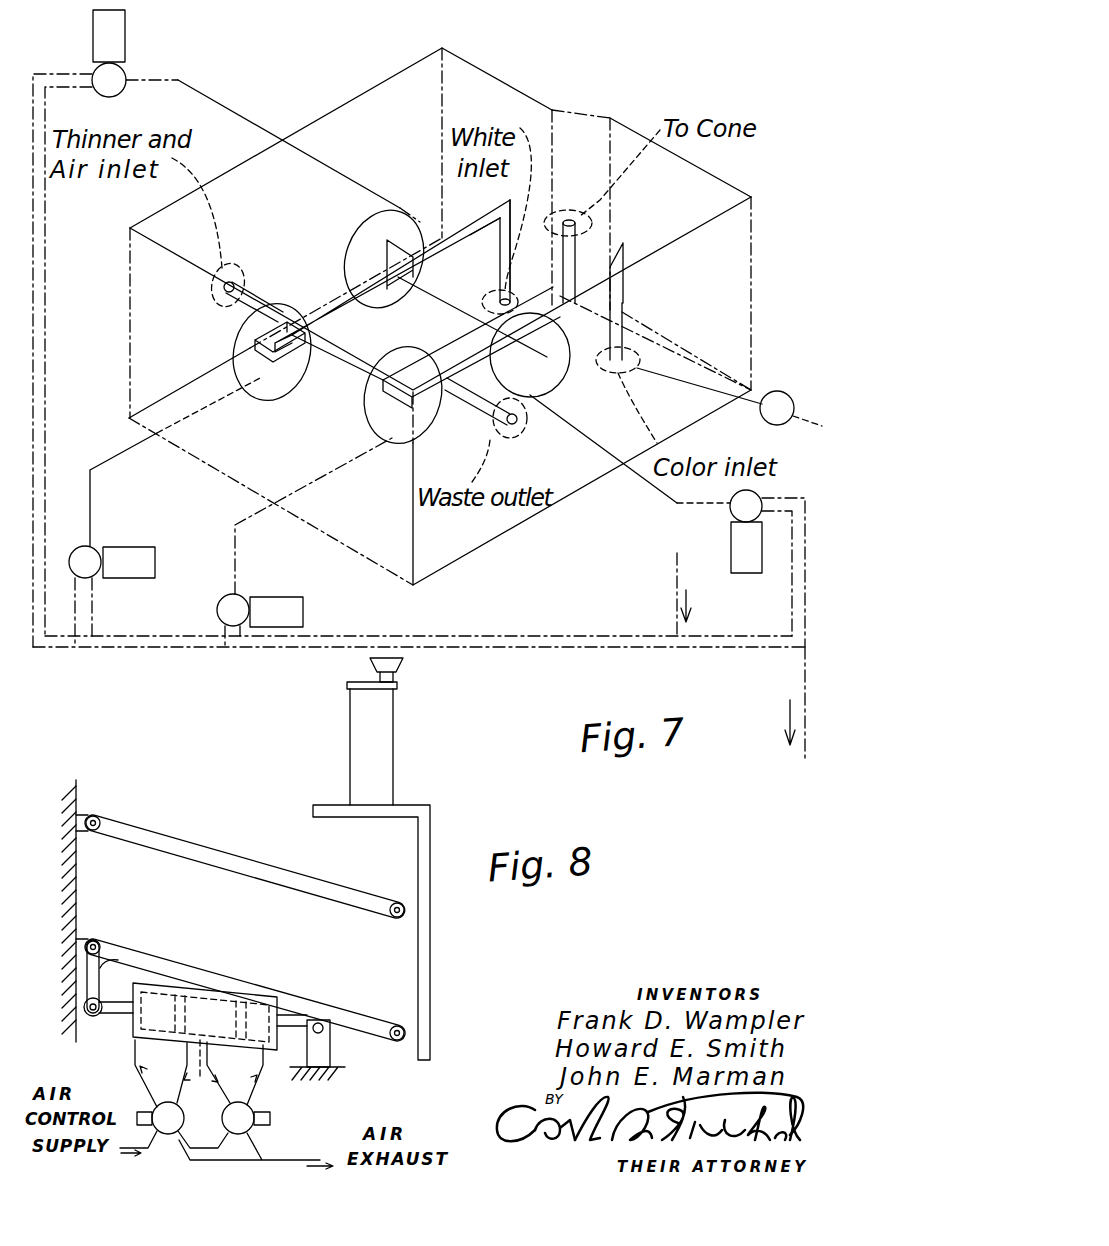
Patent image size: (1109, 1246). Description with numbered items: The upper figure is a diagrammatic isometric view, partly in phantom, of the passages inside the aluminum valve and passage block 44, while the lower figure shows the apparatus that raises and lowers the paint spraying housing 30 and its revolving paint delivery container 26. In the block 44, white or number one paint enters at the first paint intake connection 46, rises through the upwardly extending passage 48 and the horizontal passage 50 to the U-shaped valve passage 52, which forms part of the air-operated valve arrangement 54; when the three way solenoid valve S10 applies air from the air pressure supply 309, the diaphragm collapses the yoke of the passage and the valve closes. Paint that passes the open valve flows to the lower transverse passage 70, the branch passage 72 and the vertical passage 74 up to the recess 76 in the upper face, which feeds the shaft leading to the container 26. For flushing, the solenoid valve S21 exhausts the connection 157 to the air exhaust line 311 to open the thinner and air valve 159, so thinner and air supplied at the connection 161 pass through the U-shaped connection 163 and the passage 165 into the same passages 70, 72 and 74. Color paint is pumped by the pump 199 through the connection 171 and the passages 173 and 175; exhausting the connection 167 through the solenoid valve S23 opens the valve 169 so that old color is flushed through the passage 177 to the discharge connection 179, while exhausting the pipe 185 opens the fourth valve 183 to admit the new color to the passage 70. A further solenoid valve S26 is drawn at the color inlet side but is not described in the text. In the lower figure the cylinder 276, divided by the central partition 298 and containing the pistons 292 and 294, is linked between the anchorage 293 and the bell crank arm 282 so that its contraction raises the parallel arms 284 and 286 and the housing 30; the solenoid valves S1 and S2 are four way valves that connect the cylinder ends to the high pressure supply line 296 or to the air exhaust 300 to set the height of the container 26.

In FIG. 7, the valve and passage block 44 is at (520, 585).
In FIG. 7, the three way solenoid valve S10 is at (125, 30).
In FIG. 7, the valve arrangement 54 is at (357, 240).
In FIG. 7, the thinner and air valve 159 is at (270, 398).
In FIG. 7, the valve 169 is at (398, 443).
In FIG. 7, the branch passage 72 is at (560, 318).
In FIG. 7, the connection 161 is at (232, 268).
In FIG. 7, the U-shaped connection 163 is at (270, 320).
In FIG. 7, the connection 157 is at (128, 450).
In FIG. 7, the connection 167 is at (258, 527).
In FIG. 7, the passage 165 is at (330, 327).
In FIG. 7, the passage 175 is at (460, 345).
In FIG. 7, the transverse passage 70 is at (430, 305).
In FIG. 7, the horizontal passage 50 is at (480, 228).
In FIG. 7, the upwardly extending passage 48 is at (505, 244).
In FIG. 7, the U-shaped valve passage 52 is at (420, 258).
In FIG. 7, the first paint intake connection 46 is at (487, 296).
In FIG. 7, the vertical passage 74 is at (577, 252).
In FIG. 7, the recess 76 is at (590, 214).
In FIG. 7, the passage 173 is at (625, 297).
In FIG. 7, the connection 171 is at (645, 346).
In FIG. 7, the fourth valve 183 is at (562, 383).
In FIG. 7, the pump 199 is at (782, 390).
In FIG. 7, the passage 177 is at (470, 410).
In FIG. 7, the discharge connection 179 is at (525, 432).
In FIG. 7, the pipe 185 is at (667, 500).
In FIG. 7, the three way solenoid valve S21 is at (138, 568).
In FIG. 7, the three way solenoid valve S23 is at (282, 600).
In FIG. 7, the solenoid valve S26 is at (742, 565).
In FIG. 7, the air pressure supply 309 is at (500, 634).
In FIG. 7, the air exhaust line 311 is at (632, 650).
In FIG. 7, the paint delivery container 26 is at (405, 665).
In FIG. 7, the housing 30 is at (350, 722).
In FIG. 8, the parallel arm 284 is at (178, 842).
In FIG. 8, the parallel arm 286 is at (148, 958).
In FIG. 8, the bell crank arm 282 is at (97, 985).
In FIG. 8, the cylinder 276 is at (128, 1025).
In FIG. 8, the anchorage 293 is at (330, 1052).
In FIG. 8, the piston 294 is at (162, 1073).
In FIG. 8, the piston 292 is at (235, 1073).
In FIG. 8, the central partition 298 is at (199, 1071).
In FIG. 8, the solenoid valve S2 is at (145, 1112).
In FIG. 8, the solenoid valve S1 is at (270, 1118).
In FIG. 8, the supply line 296 is at (145, 1152).
In FIG. 8, the air exhaust 300 is at (313, 1162).